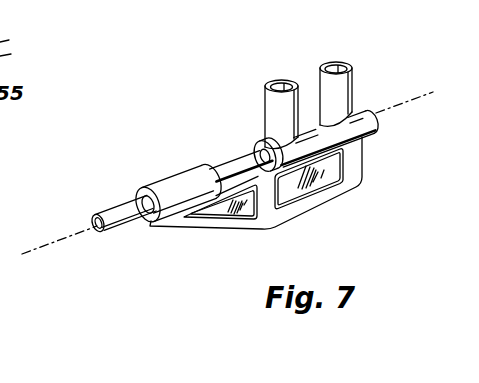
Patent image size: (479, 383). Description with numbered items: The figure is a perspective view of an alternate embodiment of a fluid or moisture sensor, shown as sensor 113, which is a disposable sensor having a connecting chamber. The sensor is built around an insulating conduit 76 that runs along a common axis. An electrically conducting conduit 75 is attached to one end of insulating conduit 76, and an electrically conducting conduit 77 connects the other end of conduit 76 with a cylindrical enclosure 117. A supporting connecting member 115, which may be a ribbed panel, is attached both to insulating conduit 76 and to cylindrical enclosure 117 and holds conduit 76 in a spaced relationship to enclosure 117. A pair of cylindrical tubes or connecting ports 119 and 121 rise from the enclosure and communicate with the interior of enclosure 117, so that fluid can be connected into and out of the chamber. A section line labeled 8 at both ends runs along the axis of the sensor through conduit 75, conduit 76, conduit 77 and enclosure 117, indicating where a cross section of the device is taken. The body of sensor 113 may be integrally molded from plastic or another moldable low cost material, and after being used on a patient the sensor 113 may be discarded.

The section line 8- 8 is at (88, 262).
The electrically conducting conduit 75 is at (117, 212).
The insulating conduit 76 is at (176, 183).
The electrically conducting conduit 77 is at (237, 167).
The alternate embodiment of the fluid or moisture sensor 113 is at (201, 98).
The supporting connecting member 115 is at (272, 215).
The cylindrical enclosure 117 is at (268, 140).
The cylindrical tube or connecting port 119 is at (279, 84).
The cylindrical tube or connecting port 121 is at (334, 65).